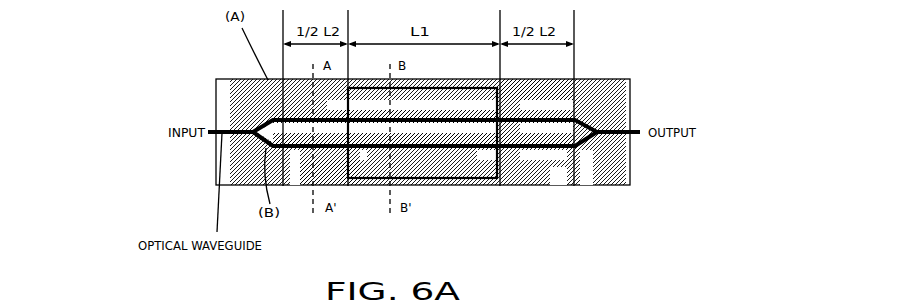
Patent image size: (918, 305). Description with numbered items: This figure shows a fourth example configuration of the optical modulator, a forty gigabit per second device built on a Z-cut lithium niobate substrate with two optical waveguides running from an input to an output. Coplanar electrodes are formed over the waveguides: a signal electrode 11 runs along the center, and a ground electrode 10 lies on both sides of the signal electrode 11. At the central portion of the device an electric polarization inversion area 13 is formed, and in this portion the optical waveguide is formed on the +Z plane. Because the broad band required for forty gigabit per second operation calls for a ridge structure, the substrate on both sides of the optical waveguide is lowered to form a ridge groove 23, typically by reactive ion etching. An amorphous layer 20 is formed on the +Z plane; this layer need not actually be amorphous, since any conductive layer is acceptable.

The ground electrode 10 is at (603, 183).
The signal electrode 11 is at (283, 183).
The electric polarization inversion area 13 is at (433, 185).
The amorphous layer 20 is at (520, 90).
The ridge groove 23 is at (277, 112).